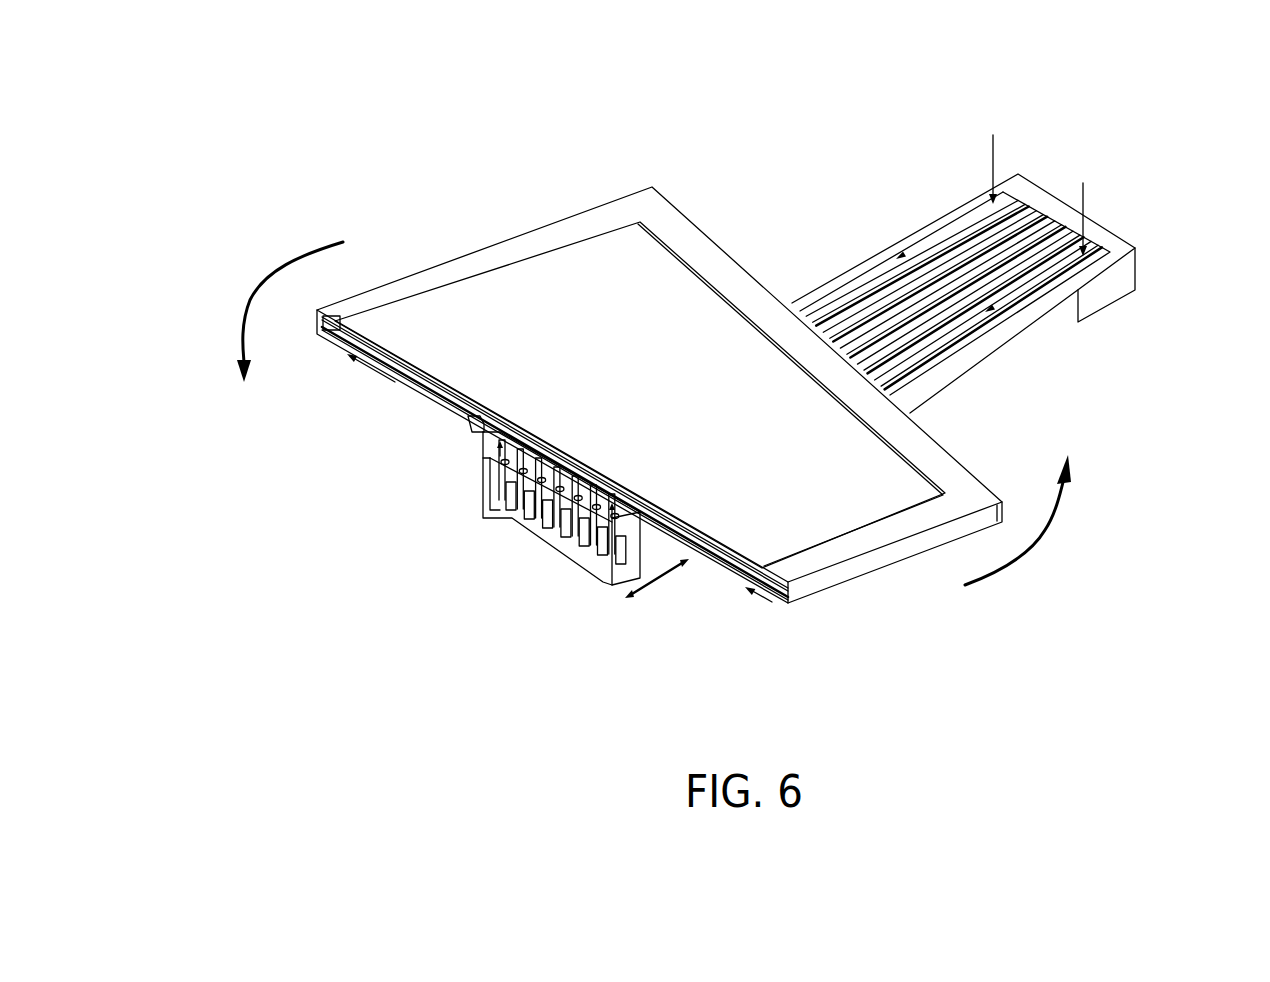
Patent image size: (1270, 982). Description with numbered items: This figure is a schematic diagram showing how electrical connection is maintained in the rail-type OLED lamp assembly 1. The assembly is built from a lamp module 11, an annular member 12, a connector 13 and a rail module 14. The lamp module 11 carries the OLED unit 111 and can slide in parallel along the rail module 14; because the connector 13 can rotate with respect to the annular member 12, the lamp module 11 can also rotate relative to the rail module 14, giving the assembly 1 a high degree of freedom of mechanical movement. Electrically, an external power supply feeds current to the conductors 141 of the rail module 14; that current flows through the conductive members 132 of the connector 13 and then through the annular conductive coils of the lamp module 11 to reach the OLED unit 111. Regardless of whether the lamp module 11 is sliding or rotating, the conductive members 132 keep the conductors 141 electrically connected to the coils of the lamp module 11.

The rail-type OLED lamp assembly 1 is at (239, 116).
The lamp module 11 is at (580, 208).
The OLED unit 111 is at (517, 288).
The annular member 12 is at (465, 410).
The connector 13 is at (477, 485).
The conductive members 132 is at (620, 510).
The rail module 14 is at (1147, 270).
The conductors 141 is at (1020, 210).